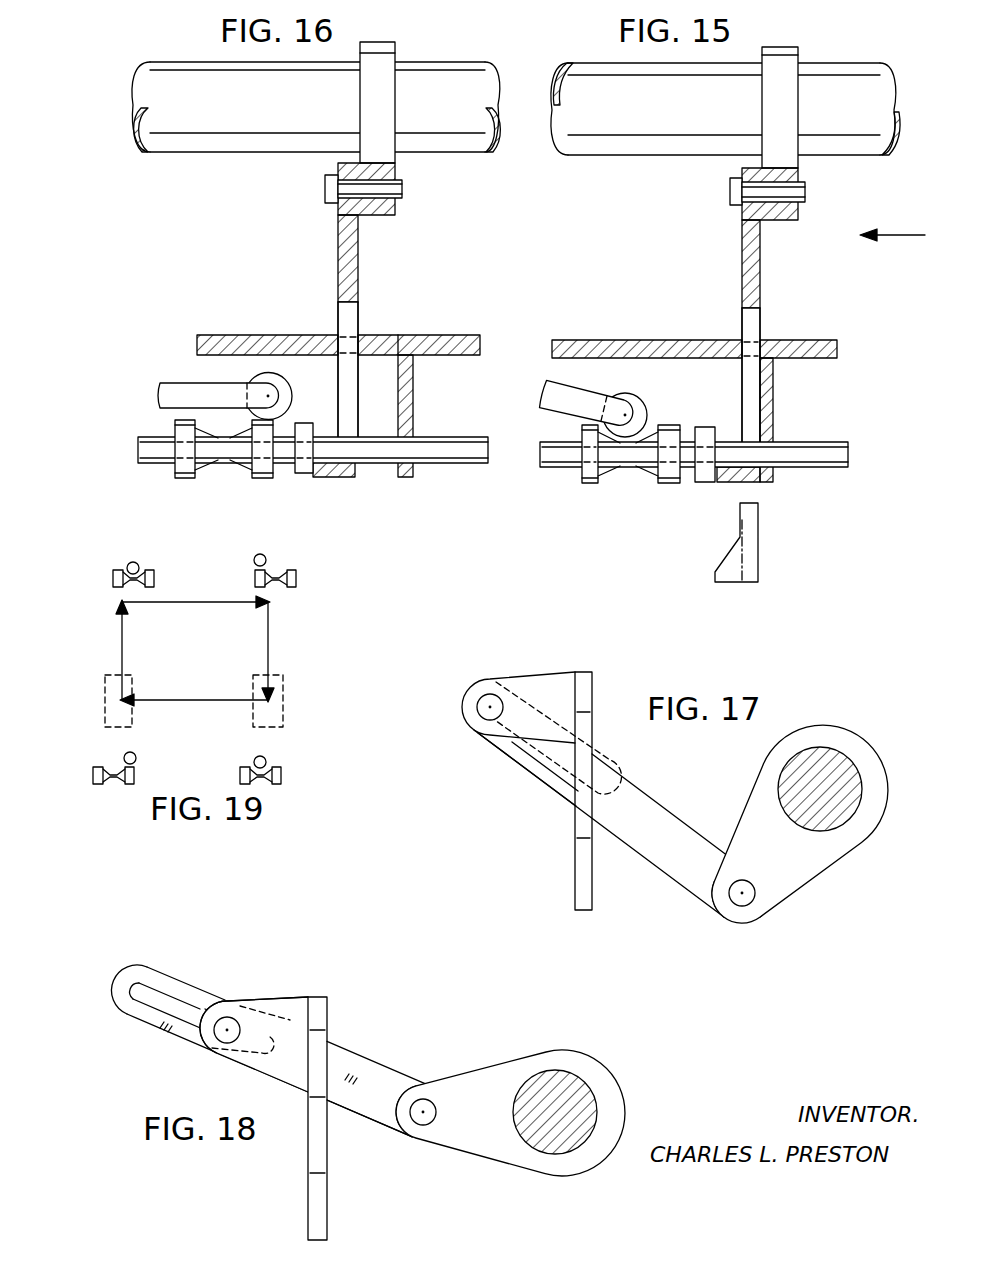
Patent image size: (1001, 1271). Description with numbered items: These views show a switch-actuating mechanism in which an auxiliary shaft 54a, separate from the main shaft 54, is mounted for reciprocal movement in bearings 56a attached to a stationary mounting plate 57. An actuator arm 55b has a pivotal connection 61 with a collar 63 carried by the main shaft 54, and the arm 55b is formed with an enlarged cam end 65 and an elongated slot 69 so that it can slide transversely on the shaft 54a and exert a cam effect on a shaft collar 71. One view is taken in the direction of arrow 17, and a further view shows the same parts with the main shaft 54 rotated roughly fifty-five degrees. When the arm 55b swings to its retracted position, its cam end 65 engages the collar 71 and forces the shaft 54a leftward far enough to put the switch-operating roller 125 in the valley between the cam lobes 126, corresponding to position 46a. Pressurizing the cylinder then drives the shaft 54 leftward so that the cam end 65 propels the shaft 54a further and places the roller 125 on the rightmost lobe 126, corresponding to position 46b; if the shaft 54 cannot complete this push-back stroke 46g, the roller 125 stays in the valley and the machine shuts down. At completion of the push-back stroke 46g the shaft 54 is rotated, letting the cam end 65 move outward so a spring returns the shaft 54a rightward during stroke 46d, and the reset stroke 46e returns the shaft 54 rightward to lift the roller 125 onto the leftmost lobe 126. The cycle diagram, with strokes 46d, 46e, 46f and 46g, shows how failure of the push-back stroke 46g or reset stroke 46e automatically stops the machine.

In FIG. 16, the main shaft 54 is at (210, 155).
In FIG. 15, the main shaft 54 is at (612, 155).
In FIG. 17, the main shaft 54 is at (832, 762).
In FIG. 18, the main shaft 54 is at (558, 1072).
In FIG. 16, the auxiliary shaft 54a is at (440, 437).
In FIG. 15, the auxiliary shaft 54a is at (825, 442).
In FIG. 17, the auxiliary shaft 54a is at (490, 694).
In FIG. 18, the auxiliary shaft 54a is at (231, 1018).
In FIG. 16, the actuator arm 55b is at (358, 252).
In FIG. 15, the actuator arm 55b is at (760, 284).
In FIG. 17, the actuator arm 55b is at (664, 800).
In FIG. 18, the actuator arm 55b is at (357, 1052).
In FIG. 16, the bearings 56a is at (413, 477).
In FIG. 15, the bearings 56a is at (773, 482).
In FIG. 17, the bearings 56a is at (535, 672).
In FIG. 18, the bearings 56a is at (254, 1044).
In FIG. 16, the stationary mounting plate 57 is at (462, 335).
In FIG. 15, the stationary mounting plate 57 is at (600, 340).
In FIG. 18, the stationary mounting plate 57 is at (327, 1213).
In FIG. 16, the pivotal connection 61 is at (402, 190).
In FIG. 15, the pivotal connection 61 is at (805, 192).
In FIG. 17, the pivotal connection 61 is at (746, 906).
In FIG. 18, the pivotal connection 61 is at (423, 1126).
In FIG. 16, the collar 63 is at (394, 46).
In FIG. 15, the collar 63 is at (798, 48).
In FIG. 17, the collar 63 is at (851, 851).
In FIG. 18, the collar 63 is at (606, 1066).
In FIG. 16, the cam end 65 is at (335, 477).
In FIG. 15, the cam end 65 is at (730, 482).
In FIG. 16, the elongated slot 69 is at (338, 318).
In FIG. 15, the elongated slot 69 is at (742, 326).
In FIG. 17, the elongated slot 69 is at (550, 770).
In FIG. 18, the elongated slot 69 is at (182, 1000).
In FIG. 16, the collar 71 is at (302, 423).
In FIG. 15, the collar 71 is at (708, 427).
In FIG. 16, the switch-operating roller 125 is at (262, 373).
In FIG. 15, the switch-operating roller 125 is at (633, 394).
In FIG. 19, the switch-operating roller 125 is at (266, 558).
In FIG. 16, the cam lobes 126 is at (255, 478).
In FIG. 15, the cam lobes 126 is at (662, 483).
In FIG. 19, the cam lobes 126 is at (97, 784).
In FIG. 15, the arrow 17 is at (895, 247).
In FIG. 19, the position 46a is at (283, 727).
In FIG. 19, the advanced position 46b is at (105, 716).
In FIG. 19, the stroke 46d is at (122, 648).
In FIG. 19, the resetting stroke 46e is at (175, 602).
In FIG. 19, the stroke 46f is at (268, 668).
In FIG. 19, the push-back stroke 46g is at (170, 700).